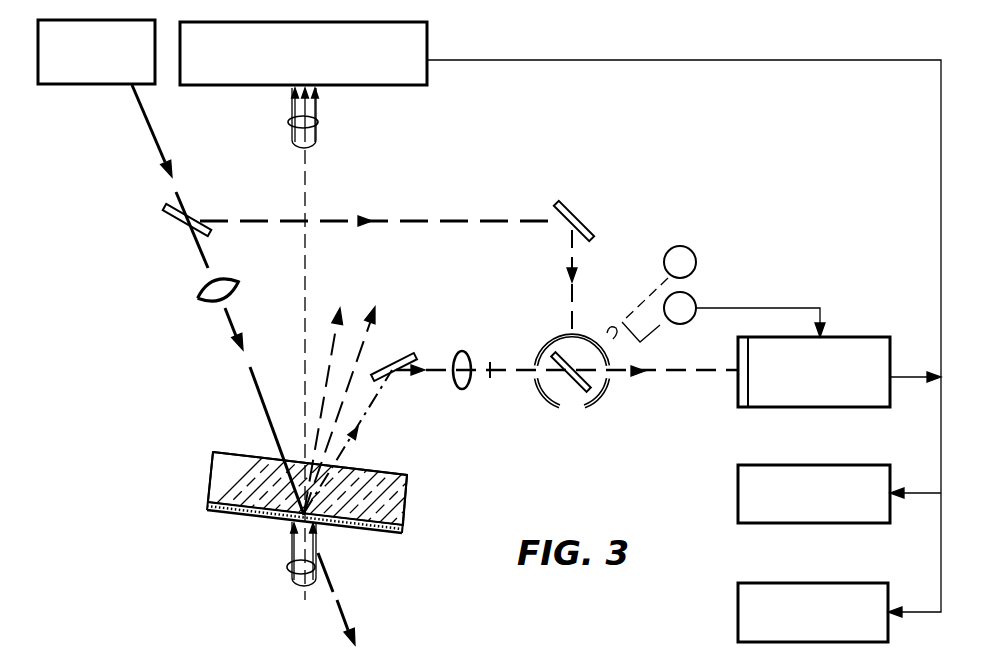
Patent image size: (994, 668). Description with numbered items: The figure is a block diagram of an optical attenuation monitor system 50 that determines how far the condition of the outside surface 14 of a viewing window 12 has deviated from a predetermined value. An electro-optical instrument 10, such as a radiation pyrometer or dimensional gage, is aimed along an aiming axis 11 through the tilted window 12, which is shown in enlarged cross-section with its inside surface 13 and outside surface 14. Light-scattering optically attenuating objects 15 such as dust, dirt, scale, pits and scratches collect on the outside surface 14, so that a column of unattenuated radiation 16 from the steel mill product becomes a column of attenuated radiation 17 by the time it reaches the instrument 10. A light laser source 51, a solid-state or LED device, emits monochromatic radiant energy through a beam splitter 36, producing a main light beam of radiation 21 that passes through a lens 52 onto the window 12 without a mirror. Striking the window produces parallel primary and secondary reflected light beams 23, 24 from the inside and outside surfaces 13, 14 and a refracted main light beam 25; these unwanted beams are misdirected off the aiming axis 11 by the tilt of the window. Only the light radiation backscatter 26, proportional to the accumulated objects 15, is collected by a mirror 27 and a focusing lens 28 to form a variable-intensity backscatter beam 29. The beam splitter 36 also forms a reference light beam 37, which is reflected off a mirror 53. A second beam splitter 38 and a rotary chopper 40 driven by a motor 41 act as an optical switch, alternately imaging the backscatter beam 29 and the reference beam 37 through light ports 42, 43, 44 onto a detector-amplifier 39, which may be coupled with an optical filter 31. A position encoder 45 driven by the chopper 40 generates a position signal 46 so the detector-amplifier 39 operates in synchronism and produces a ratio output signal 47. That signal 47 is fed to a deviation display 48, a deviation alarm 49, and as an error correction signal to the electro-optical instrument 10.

The electro-optical instrument 10 is at (405, 85).
The aiming axis 11 is at (305, 286).
The viewing window 12 is at (237, 490).
The inside surface 13 is at (247, 452).
The outside surface 14 is at (373, 507).
The light-scattering optically attenuating objects 15 is at (350, 530).
The column of unattenuated radiation 16 is at (292, 568).
The column of attenuated radiation 17 is at (318, 121).
The main light beam of radiation 21 is at (203, 258).
The primary reflected light beam 23 is at (330, 346).
The secondary reflected light beam 24 is at (367, 337).
The refracted main light beam of radiation 25 is at (345, 611).
The light radiation backscatter 26 is at (380, 415).
The mirror 27 is at (398, 356).
The focusing lens 28 is at (469, 350).
The backscatter beam 29 is at (491, 362).
The optical filter 31 is at (738, 348).
The beam splitter 36 is at (165, 214).
The reference light beam 37 is at (444, 221).
The second beam splitter 38 is at (576, 349).
The detector-amplifier 39 is at (845, 337).
The rotary chopper 40 is at (551, 342).
The motor 41 is at (696, 252).
The light port 42 is at (538, 385).
The light port 43 is at (608, 382).
The light port 44 is at (572, 410).
The position encoder 45 is at (695, 298).
The position signal 46 is at (762, 308).
The ratio output signal 47 is at (908, 375).
The deviation display 48 is at (783, 465).
The deviation alarm 49 is at (786, 583).
The optical attenuation monitor system 50 is at (684, 154).
The light laser source 51 is at (78, 85).
The lens 52 is at (205, 305).
The mirror 53 is at (566, 206).